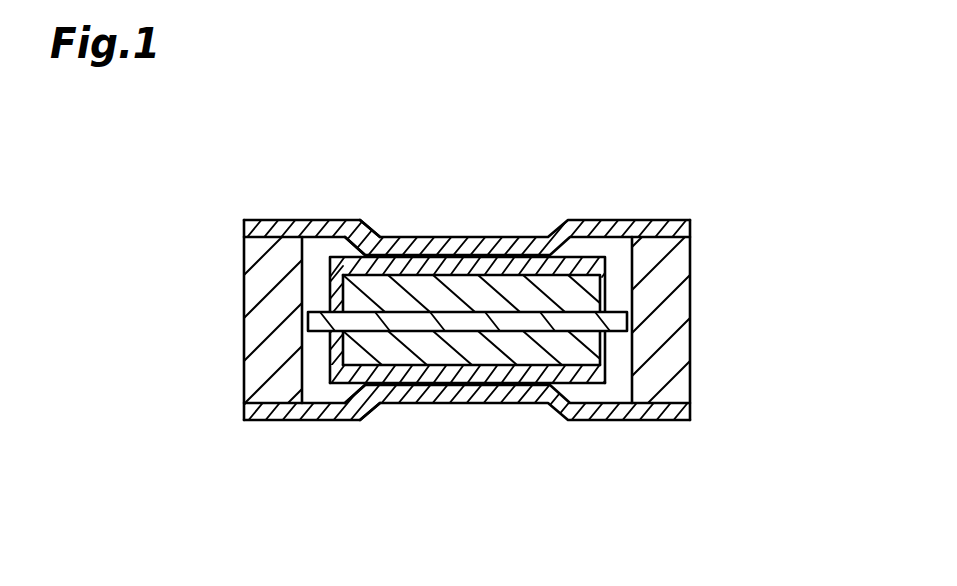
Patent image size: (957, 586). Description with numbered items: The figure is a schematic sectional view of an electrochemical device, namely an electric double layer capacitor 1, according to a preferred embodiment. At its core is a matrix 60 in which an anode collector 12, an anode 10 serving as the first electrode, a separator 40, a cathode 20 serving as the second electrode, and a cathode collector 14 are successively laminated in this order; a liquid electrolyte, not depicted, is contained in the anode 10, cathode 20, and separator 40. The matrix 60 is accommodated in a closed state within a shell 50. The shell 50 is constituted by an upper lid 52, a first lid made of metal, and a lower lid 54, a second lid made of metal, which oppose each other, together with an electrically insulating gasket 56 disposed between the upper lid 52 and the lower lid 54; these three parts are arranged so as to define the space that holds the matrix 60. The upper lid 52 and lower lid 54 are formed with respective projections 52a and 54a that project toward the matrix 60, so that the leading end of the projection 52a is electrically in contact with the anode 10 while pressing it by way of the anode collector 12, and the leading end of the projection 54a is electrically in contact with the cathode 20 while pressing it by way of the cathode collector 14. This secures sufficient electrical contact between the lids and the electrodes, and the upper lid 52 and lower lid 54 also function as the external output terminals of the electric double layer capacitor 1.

The electric double layer capacitor 1 is at (703, 129).
The anode 10 is at (340, 288).
The anode collector 12 is at (337, 260).
The cathode collector 14 is at (342, 372).
The cathode 20 is at (342, 344).
The separator 40 is at (342, 317).
The shell 50 is at (530, 322).
The upper lid 52 is at (683, 228).
The projection 52a is at (359, 238).
The lower lid 54 is at (683, 410).
The projection 54a is at (359, 403).
The gasket 56 is at (683, 312).
The matrix 60 is at (136, 248).